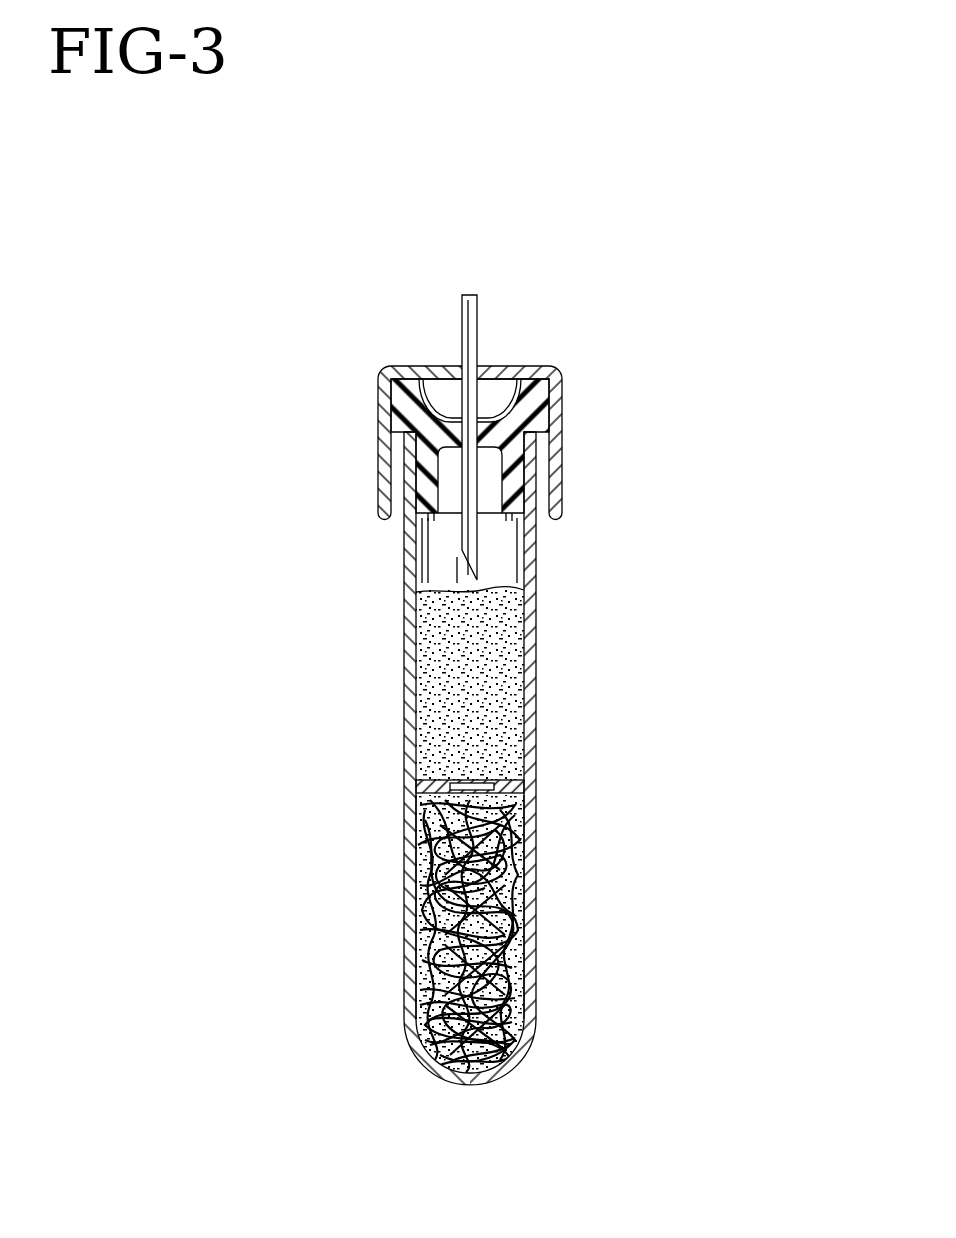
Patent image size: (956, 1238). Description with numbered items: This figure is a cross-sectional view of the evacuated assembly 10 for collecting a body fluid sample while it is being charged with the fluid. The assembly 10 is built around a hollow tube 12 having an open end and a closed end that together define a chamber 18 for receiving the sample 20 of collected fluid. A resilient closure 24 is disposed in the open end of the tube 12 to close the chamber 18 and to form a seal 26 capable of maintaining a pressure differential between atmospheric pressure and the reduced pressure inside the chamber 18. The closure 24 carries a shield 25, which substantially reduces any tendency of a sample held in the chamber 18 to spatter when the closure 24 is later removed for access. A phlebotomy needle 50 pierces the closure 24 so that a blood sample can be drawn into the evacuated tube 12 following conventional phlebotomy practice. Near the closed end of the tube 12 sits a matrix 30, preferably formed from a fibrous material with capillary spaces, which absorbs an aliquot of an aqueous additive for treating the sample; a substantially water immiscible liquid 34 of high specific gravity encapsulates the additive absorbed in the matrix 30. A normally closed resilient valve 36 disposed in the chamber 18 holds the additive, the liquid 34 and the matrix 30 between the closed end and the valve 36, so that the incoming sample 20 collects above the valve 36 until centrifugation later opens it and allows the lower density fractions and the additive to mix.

The assembly 10 is at (657, 278).
The hollow tube 12 is at (535, 713).
The chamber 18 is at (530, 563).
The sample 20 is at (425, 632).
The resilient closure 24 is at (397, 393).
The shield 25 is at (560, 470).
The seal 26 is at (388, 455).
The matrix 30 is at (543, 938).
The water immiscible liquid 34 is at (407, 800).
The resilient valve 36 is at (535, 780).
The phlebotomy needle 50 is at (460, 323).